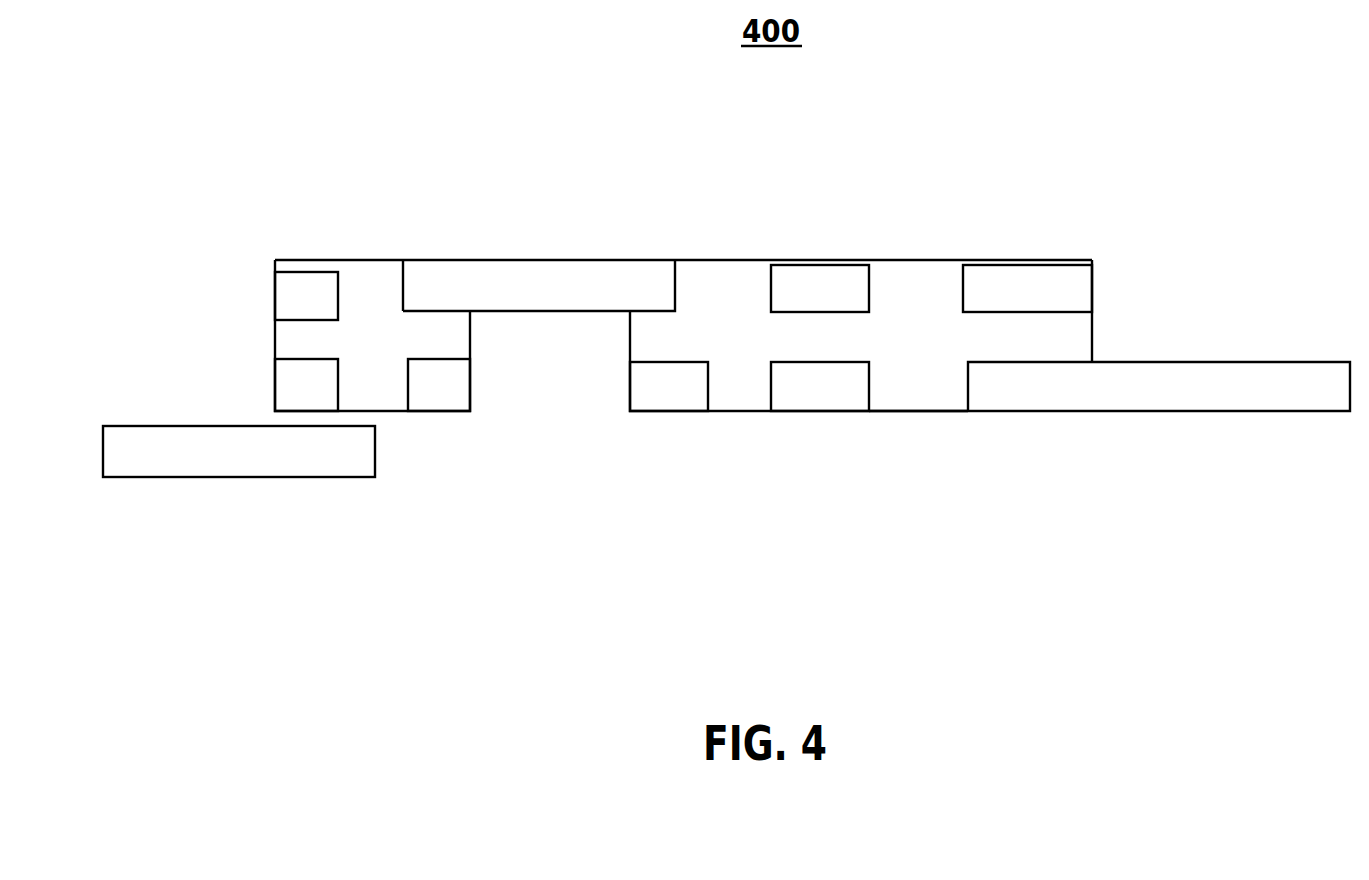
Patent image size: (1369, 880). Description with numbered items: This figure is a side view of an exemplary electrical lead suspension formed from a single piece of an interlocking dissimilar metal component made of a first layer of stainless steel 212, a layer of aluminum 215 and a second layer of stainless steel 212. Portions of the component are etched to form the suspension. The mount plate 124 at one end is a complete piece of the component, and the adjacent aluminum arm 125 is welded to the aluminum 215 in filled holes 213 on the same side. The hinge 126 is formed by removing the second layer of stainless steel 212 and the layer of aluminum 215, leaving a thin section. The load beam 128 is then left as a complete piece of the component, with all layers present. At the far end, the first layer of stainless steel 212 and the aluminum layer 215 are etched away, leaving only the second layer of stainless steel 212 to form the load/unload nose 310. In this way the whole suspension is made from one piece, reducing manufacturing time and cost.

The mount plate 124 is at (472, 225).
The aluminum arm 125 is at (375, 507).
The hinge 126 is at (632, 445).
The load beam 128 is at (907, 329).
The stainless steel layer 212 is at (1063, 283).
The filled holes 213 is at (913, 393).
The aluminum layer 215 is at (1063, 342).
The load/unload nose 310 is at (1350, 448).